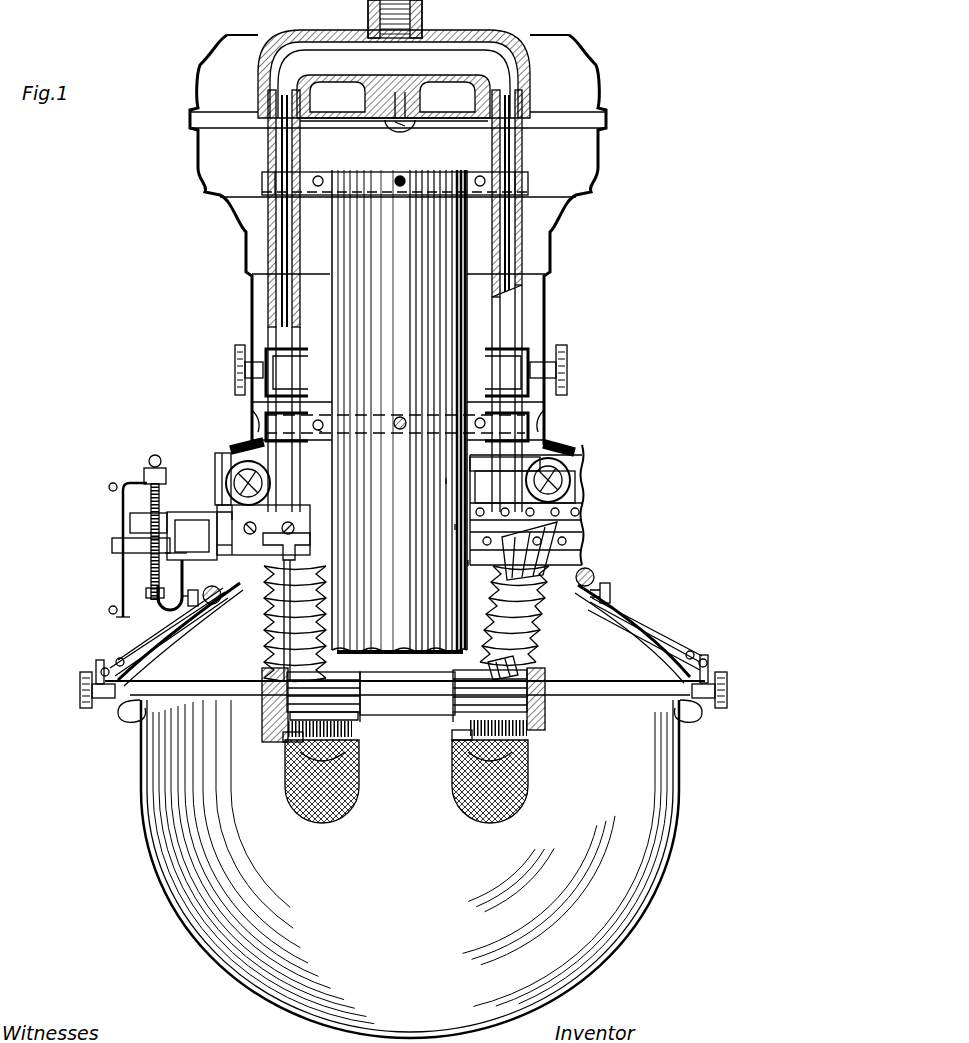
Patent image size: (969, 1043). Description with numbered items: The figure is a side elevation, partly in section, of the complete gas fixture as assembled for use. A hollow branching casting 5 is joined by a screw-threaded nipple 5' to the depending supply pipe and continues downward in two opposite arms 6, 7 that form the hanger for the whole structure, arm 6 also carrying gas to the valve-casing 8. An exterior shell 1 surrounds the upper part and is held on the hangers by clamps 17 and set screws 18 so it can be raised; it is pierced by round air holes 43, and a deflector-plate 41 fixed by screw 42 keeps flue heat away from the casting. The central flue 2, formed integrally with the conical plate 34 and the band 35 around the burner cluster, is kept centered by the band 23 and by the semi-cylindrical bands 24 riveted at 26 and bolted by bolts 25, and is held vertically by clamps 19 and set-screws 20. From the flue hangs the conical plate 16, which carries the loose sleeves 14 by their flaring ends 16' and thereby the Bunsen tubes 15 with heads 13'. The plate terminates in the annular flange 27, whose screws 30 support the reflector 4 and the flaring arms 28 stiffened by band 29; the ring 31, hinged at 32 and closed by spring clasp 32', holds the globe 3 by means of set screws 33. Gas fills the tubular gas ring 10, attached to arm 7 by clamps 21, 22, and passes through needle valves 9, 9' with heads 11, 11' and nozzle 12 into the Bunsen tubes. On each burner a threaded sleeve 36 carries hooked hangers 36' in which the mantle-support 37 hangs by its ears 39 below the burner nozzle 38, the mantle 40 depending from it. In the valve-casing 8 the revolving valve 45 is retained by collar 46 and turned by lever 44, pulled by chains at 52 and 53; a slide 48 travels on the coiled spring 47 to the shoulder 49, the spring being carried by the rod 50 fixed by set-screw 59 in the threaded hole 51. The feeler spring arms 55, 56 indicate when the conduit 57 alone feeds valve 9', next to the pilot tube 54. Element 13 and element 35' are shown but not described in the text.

The exterior shell or casing 1 is at (600, 77).
The flue or chimney 2 is at (395, 410).
The transparent semi-spherical globe 3 is at (668, 841).
The reflector 4 is at (613, 626).
The branching pipe or casting 5 is at (394, 63).
The screw-threaded nipple 5' is at (412, 19).
The depending arm or pipe 6 is at (268, 143).
The depending arm or pipe 7 is at (522, 146).
The valve-casing 8 is at (262, 540).
The gas valve 9 is at (578, 480).
The gas valve 9' is at (226, 460).
The tubular gas ring 10 is at (221, 472).
The valve head 11 is at (579, 435).
The valve head 11' is at (240, 435).
The nozzle 12 is at (584, 508).
The ring holder 13 is at (559, 487).
The Bunsen tube head 13' is at (585, 551).
The loose sleeve 14 is at (272, 612).
The Bunsen tube 15 is at (514, 670).
The conical plate 16 is at (432, 563).
The outwardly flaring upper end 16' is at (421, 524).
The clamp 17 is at (278, 348).
The set screw 18 is at (236, 358).
The clamp 19 is at (258, 416).
The set-screw 20 is at (265, 425).
The clamp 21 is at (505, 465).
The clamp 22 is at (447, 481).
The band 23 is at (528, 183).
The semi-cylindrical band 24 is at (322, 425).
The bolt 25 is at (318, 176).
The rivet or fastening 26 is at (400, 176).
The depending annular flange 27 is at (211, 587).
The depending outwardly flaring arm or bar 28 is at (160, 643).
The annular band 29 is at (113, 660).
The screw 30 is at (172, 611).
The ring 31 is at (96, 668).
The hinge 32 is at (69, 672).
The spring clasp 32' is at (719, 648).
The set screw 33 is at (80, 692).
The conical plate 34 is at (393, 650).
The band 35 is at (406, 705).
The socket ring 35' is at (288, 736).
The sleeve 36 is at (407, 692).
The hooked mantle-support hanger 36' is at (336, 759).
The mantle-support 37 is at (352, 738).
The burner nozzle 38 is at (312, 762).
The ear 39 is at (284, 755).
The mantle 40 is at (336, 825).
The deflector-plate 41 is at (470, 115).
The screw 42 is at (399, 92).
The air openings or ports 43 is at (580, 546).
The operating lever 44 is at (119, 490).
The revolving valve 45 is at (112, 546).
The screw-threaded collar 46 is at (187, 560).
The coiled spring 47 is at (150, 466).
The sleeve or slide 48 is at (160, 456).
The shoulder 49 is at (146, 594).
The rod or bar 50 is at (122, 618).
The threaded hole 51 is at (215, 546).
The chain attachment 52 is at (110, 609).
The chain attachment 53 is at (112, 483).
The pilot tube 54 is at (258, 655).
The spring arm 55 is at (130, 514).
The arm 56 is at (133, 527).
The conduit 57 is at (250, 515).
The set-screw 59 is at (241, 520).